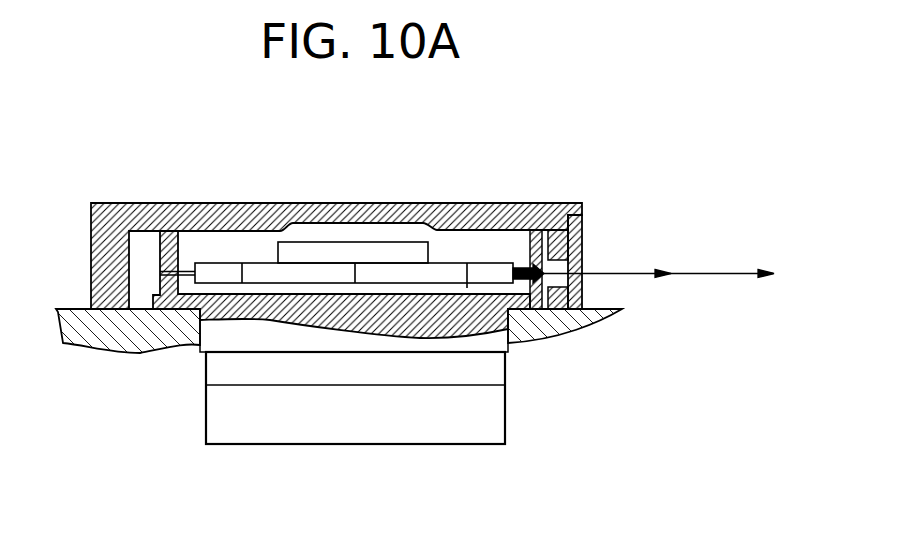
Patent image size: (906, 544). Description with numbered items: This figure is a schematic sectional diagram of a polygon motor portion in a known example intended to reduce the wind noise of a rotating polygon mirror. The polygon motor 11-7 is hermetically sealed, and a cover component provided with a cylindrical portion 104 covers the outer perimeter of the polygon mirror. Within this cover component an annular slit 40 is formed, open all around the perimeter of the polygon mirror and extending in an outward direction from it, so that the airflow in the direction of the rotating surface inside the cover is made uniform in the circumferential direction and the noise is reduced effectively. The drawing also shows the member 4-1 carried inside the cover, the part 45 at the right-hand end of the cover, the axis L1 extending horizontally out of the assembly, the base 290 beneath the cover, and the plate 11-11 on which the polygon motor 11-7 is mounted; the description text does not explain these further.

The cylindrical portion 104 is at (345, 202).
The annular slit 40 is at (178, 272).
The lens holding member 4-1 is at (468, 258).
The cover member 45 is at (582, 222).
The optical axis L1 is at (702, 273).
The base 290 is at (563, 325).
The bottom plate 11-11 is at (237, 287).
The polygon motor 11-7 is at (242, 337).